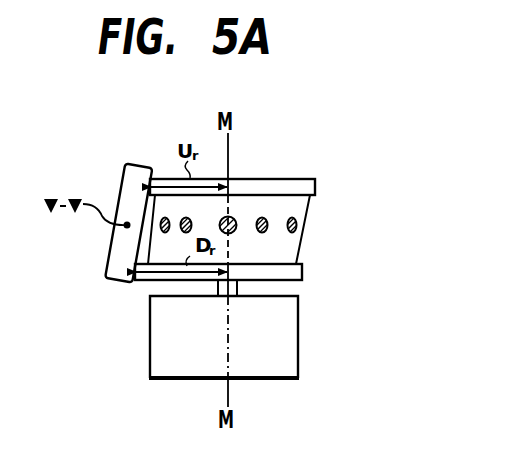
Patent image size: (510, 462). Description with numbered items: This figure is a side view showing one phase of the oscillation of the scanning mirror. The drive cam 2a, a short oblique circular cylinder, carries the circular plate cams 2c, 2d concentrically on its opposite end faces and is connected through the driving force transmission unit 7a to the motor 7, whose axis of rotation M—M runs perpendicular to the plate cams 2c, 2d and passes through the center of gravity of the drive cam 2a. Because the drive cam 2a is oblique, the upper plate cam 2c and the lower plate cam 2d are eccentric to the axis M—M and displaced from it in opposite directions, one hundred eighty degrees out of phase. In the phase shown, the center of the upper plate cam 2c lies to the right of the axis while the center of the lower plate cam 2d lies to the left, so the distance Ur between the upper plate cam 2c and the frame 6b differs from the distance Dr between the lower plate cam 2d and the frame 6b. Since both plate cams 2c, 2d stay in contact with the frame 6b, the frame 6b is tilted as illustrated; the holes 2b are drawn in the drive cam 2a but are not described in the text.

The drive cam 2a is at (297, 210).
The holes 2b is at (298, 228).
The upper plate cam 2c is at (310, 184).
The lower plate cam 2d is at (302, 272).
The frame 6b is at (120, 263).
The motor 7 is at (173, 367).
The driving force transmission unit 7a is at (238, 289).